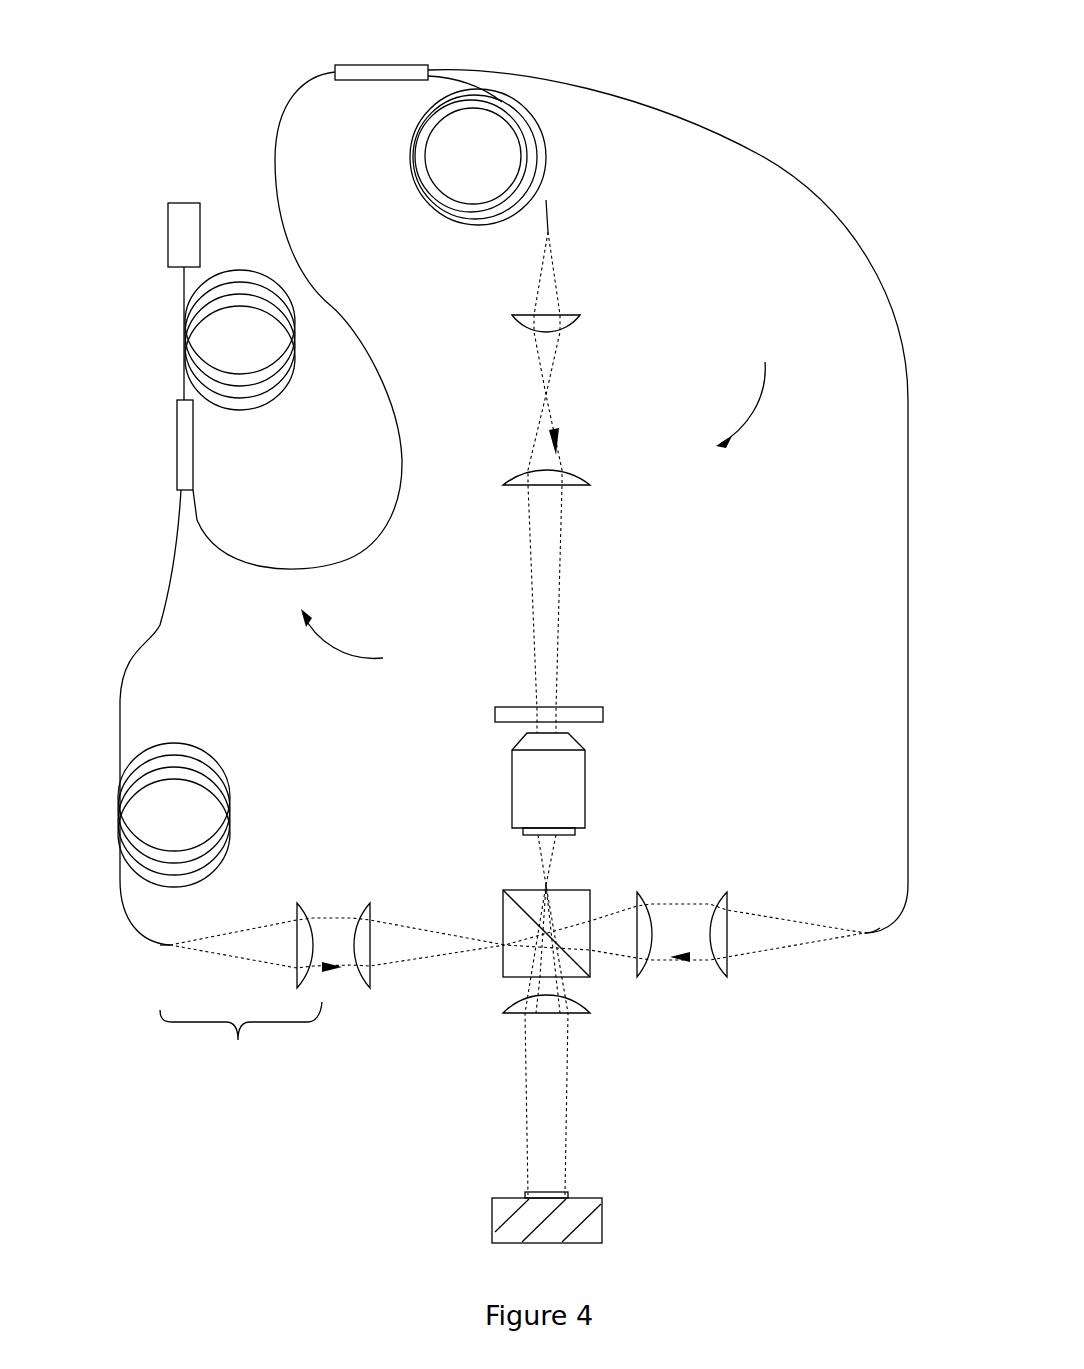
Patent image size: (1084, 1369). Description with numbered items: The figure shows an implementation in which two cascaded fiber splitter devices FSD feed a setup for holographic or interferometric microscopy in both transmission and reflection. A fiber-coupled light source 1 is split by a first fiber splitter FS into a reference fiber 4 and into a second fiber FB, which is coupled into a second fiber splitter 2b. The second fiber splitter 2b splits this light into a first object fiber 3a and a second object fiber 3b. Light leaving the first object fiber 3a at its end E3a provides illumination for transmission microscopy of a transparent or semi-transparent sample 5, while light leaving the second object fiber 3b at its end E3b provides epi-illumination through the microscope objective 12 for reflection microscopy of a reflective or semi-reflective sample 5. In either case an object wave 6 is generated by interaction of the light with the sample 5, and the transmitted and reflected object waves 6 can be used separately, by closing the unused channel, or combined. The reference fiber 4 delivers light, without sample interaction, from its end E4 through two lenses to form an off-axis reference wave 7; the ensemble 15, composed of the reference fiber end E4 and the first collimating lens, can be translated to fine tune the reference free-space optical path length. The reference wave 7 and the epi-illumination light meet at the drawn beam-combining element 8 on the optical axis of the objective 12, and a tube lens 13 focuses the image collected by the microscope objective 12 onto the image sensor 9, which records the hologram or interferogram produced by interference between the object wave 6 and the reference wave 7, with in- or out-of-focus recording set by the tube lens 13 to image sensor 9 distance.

The light source 1 is at (188, 232).
The second fiber splitter 2b is at (375, 62).
The first object fiber 3a is at (550, 212).
The second object fiber 3b is at (733, 112).
The first object fiber end E3a is at (552, 235).
The second object fiber end E3b is at (865, 935).
The reference fiber end E4 is at (169, 947).
The first fiber splitter FS is at (182, 440).
The second fiber FB is at (377, 540).
The fiber splitter device FSD is at (546, 500).
The reference fiber 4 is at (153, 630).
The sample 5 is at (603, 710).
The object wave 6 is at (552, 882).
The reference wave 7 is at (400, 935).
The beam splitter cube 8 is at (505, 920).
The image sensor 9 is at (568, 1199).
The microscope objective 12 is at (573, 798).
The tube lens 13 is at (577, 1013).
The ensemble 15 is at (265, 999).